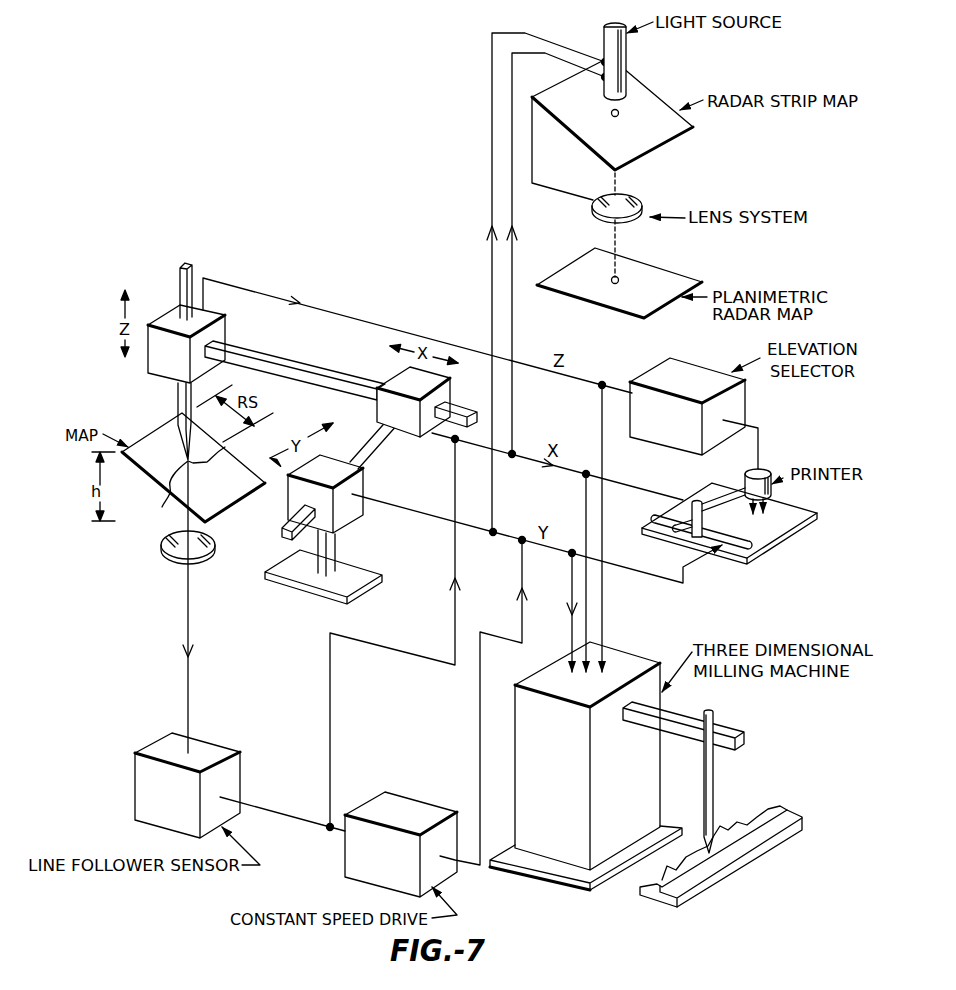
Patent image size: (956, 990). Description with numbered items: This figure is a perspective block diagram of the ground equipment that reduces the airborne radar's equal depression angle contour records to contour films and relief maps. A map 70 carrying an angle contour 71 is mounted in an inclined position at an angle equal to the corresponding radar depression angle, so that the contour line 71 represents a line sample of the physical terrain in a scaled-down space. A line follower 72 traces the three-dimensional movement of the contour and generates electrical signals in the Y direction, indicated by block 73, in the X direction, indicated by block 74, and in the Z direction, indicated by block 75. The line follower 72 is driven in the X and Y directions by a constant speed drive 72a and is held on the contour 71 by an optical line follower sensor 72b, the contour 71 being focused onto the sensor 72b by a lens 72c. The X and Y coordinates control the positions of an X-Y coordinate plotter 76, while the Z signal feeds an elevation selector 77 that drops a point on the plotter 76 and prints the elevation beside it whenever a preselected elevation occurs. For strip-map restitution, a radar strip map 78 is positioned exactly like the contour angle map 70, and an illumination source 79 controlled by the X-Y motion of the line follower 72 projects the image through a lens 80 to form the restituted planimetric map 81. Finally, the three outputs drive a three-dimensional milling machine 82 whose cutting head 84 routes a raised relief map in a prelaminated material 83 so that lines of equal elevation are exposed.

The map 70 is at (157, 437).
The angle contour 71 is at (163, 505).
The line follower 72 is at (323, 364).
The constant speed drive 72a is at (228, 921).
The optical line follower sensor 72b is at (60, 857).
The lens 72c is at (163, 562).
The Y direction block 73 is at (343, 525).
The X direction block 74 is at (427, 438).
The Z direction block 75 is at (170, 318).
The X-Y coordinate plotter 76 is at (767, 550).
The elevation selector 77 is at (703, 369).
The radar strip map 78 is at (667, 107).
The illumination source 79 is at (627, 66).
The lens 80 is at (645, 208).
The restituted map 81 is at (678, 277).
The three-dimensional milling machine 82 is at (630, 660).
The material 83 is at (767, 812).
The cutting head 84 is at (714, 799).